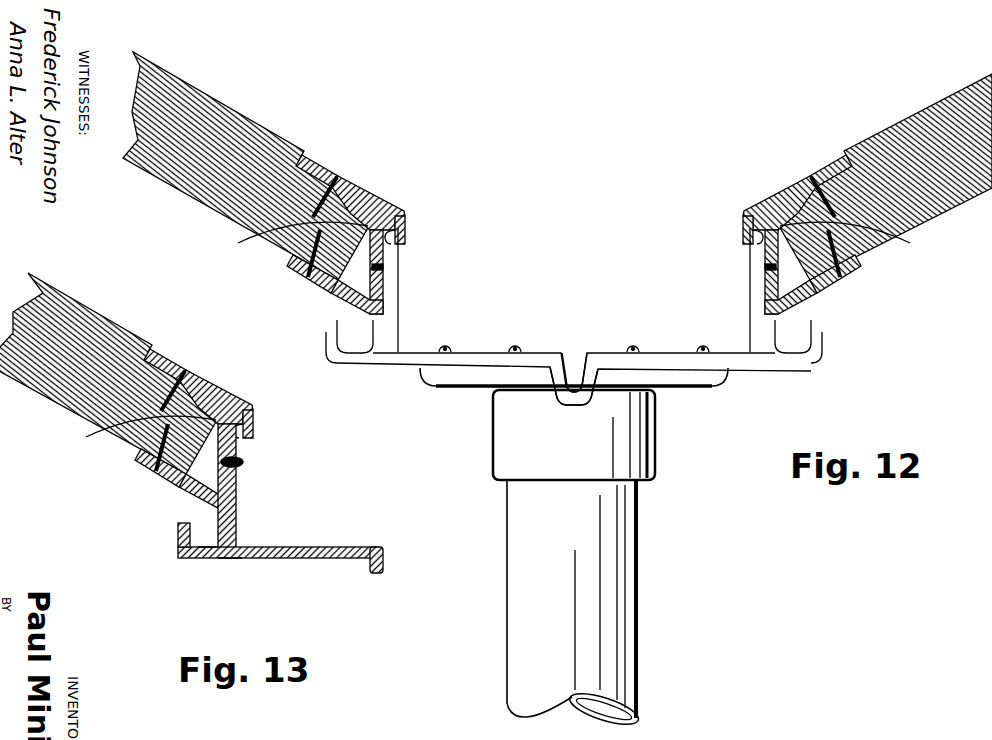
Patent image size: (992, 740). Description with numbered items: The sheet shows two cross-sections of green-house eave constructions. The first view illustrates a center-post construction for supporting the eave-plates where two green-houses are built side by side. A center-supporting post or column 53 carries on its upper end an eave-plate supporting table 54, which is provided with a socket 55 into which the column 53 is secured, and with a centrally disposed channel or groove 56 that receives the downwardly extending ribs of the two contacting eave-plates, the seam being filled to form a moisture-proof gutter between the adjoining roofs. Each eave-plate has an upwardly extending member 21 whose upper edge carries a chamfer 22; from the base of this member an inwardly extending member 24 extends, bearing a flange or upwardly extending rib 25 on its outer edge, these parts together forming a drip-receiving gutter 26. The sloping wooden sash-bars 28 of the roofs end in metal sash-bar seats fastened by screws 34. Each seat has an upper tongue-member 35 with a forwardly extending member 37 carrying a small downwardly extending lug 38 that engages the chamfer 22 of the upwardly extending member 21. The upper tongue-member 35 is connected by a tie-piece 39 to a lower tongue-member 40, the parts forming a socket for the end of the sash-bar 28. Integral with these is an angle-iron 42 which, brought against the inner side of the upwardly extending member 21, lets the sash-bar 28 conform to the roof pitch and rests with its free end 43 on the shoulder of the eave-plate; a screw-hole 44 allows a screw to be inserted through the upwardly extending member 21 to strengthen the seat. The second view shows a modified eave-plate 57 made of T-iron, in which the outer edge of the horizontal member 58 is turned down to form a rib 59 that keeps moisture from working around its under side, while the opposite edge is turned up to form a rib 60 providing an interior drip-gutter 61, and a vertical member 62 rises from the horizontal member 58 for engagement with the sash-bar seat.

In FIG. 12, the sash-bar 28 is at (213, 107).
In FIG. 13, the sash-bar 28 is at (83, 313).
In FIG. 12, the upper tongue-member 35 is at (320, 158).
In FIG. 13, the upper tongue-member 35 is at (167, 353).
In FIG. 12, the screws 34 is at (338, 173).
In FIG. 13, the screws 34 is at (195, 380).
In FIG. 12, the forwardly extending member 37 is at (404, 213).
In FIG. 13, the forwardly extending member 37 is at (240, 410).
In FIG. 12, the downwardly extending lug 38 is at (407, 226).
In FIG. 13, the downwardly extending lug 38 is at (253, 417).
In FIG. 12, the chamfer 22 is at (400, 248).
In FIG. 12, the screw-hole 44 is at (383, 268).
In FIG. 12, the upwardly extending member 21 is at (392, 289).
In FIG. 12, the free end 43 is at (383, 308).
In FIG. 12, the angle-iron 42 is at (380, 308).
In FIG. 13, the angle-iron 42 is at (203, 493).
In FIG. 12, the tie-piece 39 is at (575, 240).
In FIG. 13, the tie-piece 39 is at (150, 444).
In FIG. 12, the lower tongue-member 40 is at (296, 261).
In FIG. 12, the flange or upwardly extending rib 25 is at (326, 332).
In FIG. 12, the drip-receiving gutter 26 is at (352, 358).
In FIG. 12, the inwardly extending member 24 is at (797, 364).
In FIG. 12, the eave-plate supporting table 54 is at (448, 378).
In FIG. 12, the socket 55 is at (492, 460).
In FIG. 12, the channel or groove 56 is at (592, 407).
In FIG. 12, the center-supporting post or column 53 is at (638, 549).
In FIG. 13, the vertical member 62 is at (243, 493).
In FIG. 13, the horizontal member 58 is at (327, 547).
In FIG. 13, the rib 60 is at (177, 535).
In FIG. 13, the interior drip-gutter 61 is at (223, 547).
In FIG. 13, the eave-plate 57 is at (238, 558).
In FIG. 13, the rib 59 is at (383, 563).